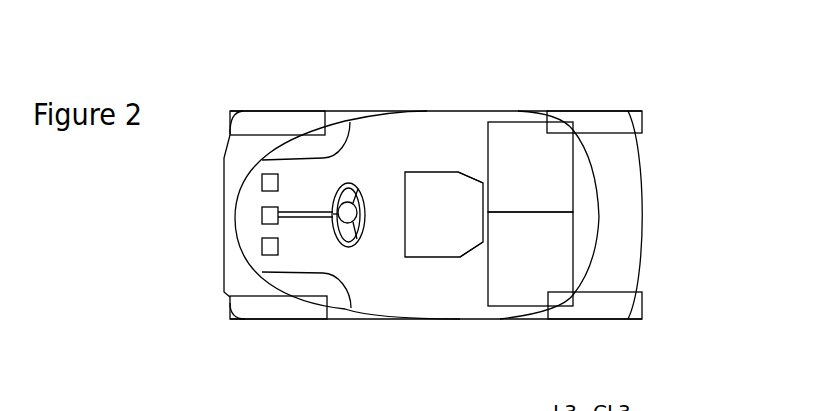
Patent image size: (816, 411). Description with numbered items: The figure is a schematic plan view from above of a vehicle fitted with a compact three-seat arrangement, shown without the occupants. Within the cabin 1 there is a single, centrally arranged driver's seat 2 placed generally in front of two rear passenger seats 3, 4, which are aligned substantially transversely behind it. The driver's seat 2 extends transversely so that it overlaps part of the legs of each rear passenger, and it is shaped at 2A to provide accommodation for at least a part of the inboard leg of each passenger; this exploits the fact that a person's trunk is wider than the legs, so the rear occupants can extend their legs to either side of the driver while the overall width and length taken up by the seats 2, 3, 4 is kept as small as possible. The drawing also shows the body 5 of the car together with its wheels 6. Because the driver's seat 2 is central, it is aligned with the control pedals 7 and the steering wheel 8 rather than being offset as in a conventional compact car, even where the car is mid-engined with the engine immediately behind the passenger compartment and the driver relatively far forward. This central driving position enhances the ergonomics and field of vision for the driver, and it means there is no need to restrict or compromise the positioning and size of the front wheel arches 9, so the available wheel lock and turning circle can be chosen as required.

The cabin 1 is at (369, 318).
The driver's seat 2 is at (435, 176).
The shaped portion of driver's seat 2A is at (467, 173).
The rear passenger seat 3 is at (528, 140).
The rear passenger seat 4 is at (525, 283).
The body 5 is at (652, 226).
The wheels 6 is at (274, 320).
The control pedals 7 is at (262, 218).
The steering wheel 8 is at (351, 176).
The front wheel arches 9 is at (326, 134).